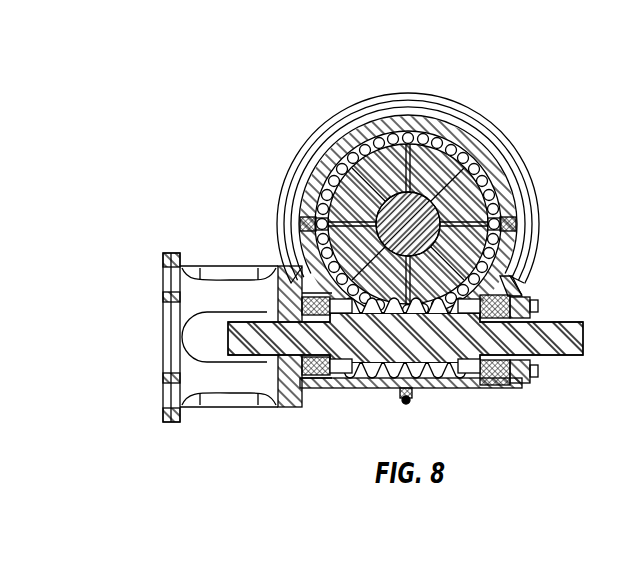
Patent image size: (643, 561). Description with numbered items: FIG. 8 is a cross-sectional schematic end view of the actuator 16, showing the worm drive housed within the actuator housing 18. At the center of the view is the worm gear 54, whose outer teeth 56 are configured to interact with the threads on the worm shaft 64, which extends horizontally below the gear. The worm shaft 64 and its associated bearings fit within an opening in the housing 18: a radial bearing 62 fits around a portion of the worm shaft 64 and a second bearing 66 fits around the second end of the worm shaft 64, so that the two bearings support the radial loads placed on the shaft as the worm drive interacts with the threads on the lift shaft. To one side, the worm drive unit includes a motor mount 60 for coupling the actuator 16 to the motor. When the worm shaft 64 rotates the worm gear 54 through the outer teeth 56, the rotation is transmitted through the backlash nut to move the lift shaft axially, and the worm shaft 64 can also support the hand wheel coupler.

The actuator 16 is at (524, 71).
The housing 18 is at (314, 135).
The worm gear 54 is at (436, 180).
The outer teeth 56 is at (488, 193).
The motor mount 60 is at (163, 327).
The radial bearing 62 is at (330, 388).
The worm shaft 64 is at (558, 323).
The second bearing 66 is at (502, 388).